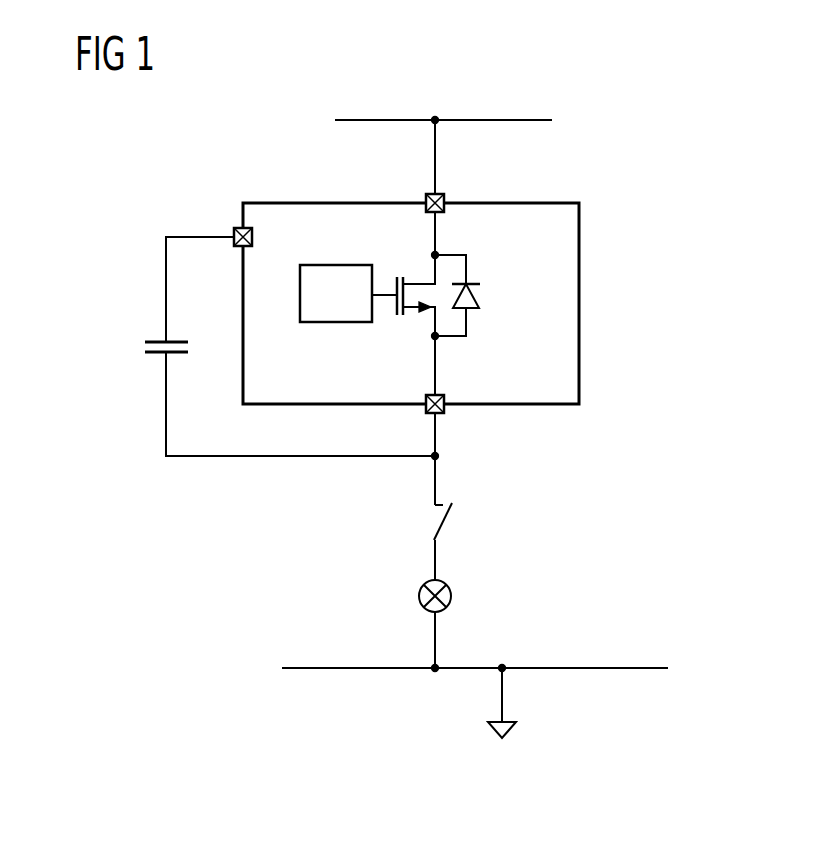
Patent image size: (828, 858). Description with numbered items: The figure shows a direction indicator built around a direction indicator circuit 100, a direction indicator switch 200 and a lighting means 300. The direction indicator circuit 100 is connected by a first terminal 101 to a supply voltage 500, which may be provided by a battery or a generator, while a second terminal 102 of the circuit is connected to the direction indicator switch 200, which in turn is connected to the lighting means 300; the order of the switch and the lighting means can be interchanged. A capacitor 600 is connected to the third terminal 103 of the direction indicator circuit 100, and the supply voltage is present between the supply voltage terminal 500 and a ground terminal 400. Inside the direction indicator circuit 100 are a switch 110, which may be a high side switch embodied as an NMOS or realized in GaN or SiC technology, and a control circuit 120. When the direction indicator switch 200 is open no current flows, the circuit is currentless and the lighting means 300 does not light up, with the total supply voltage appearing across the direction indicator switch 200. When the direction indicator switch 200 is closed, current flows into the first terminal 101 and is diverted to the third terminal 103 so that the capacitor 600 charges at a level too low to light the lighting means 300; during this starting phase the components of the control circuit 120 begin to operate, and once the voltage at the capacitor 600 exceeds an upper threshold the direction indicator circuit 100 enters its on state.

The direction indicator circuit 100 is at (582, 297).
The first terminal 101 is at (430, 195).
The second terminal 102 is at (447, 410).
The third terminal 103 is at (237, 247).
The switch 110 is at (482, 320).
The control circuit 120 is at (335, 325).
The direction indicator switch 200 is at (456, 525).
The lighting means 300 is at (455, 597).
The ground terminal 400 is at (598, 668).
The supply voltage 500 is at (364, 119).
The capacitor 600 is at (150, 345).